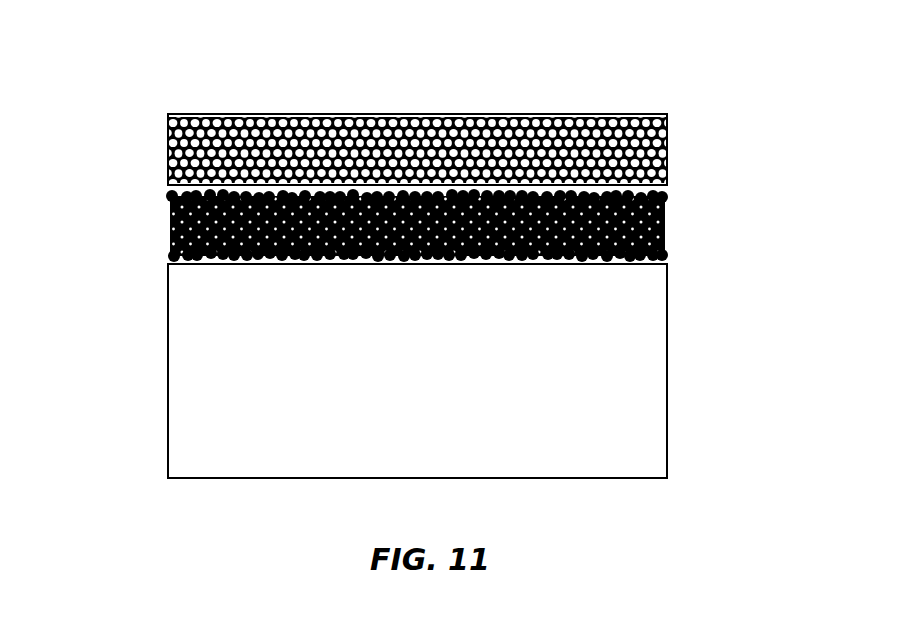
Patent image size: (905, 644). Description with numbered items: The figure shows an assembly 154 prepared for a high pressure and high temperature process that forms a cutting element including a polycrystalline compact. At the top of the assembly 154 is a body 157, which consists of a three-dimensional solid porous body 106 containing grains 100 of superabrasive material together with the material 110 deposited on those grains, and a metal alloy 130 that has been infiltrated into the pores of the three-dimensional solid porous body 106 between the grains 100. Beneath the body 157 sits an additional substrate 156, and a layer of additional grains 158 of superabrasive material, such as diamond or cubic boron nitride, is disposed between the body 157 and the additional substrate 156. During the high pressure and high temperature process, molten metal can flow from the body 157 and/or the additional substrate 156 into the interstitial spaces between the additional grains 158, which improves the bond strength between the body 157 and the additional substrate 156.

The assembly 154 is at (116, 106).
The body 157 is at (670, 95).
The three-dimensional solid porous body 106 is at (220, 101).
The metal alloy 130 is at (266, 106).
The grains of superabrasive material 100 is at (406, 106).
The material 110 is at (500, 106).
The additional grains of superabrasive material 158 is at (658, 203).
The additional substrate 156 is at (193, 378).